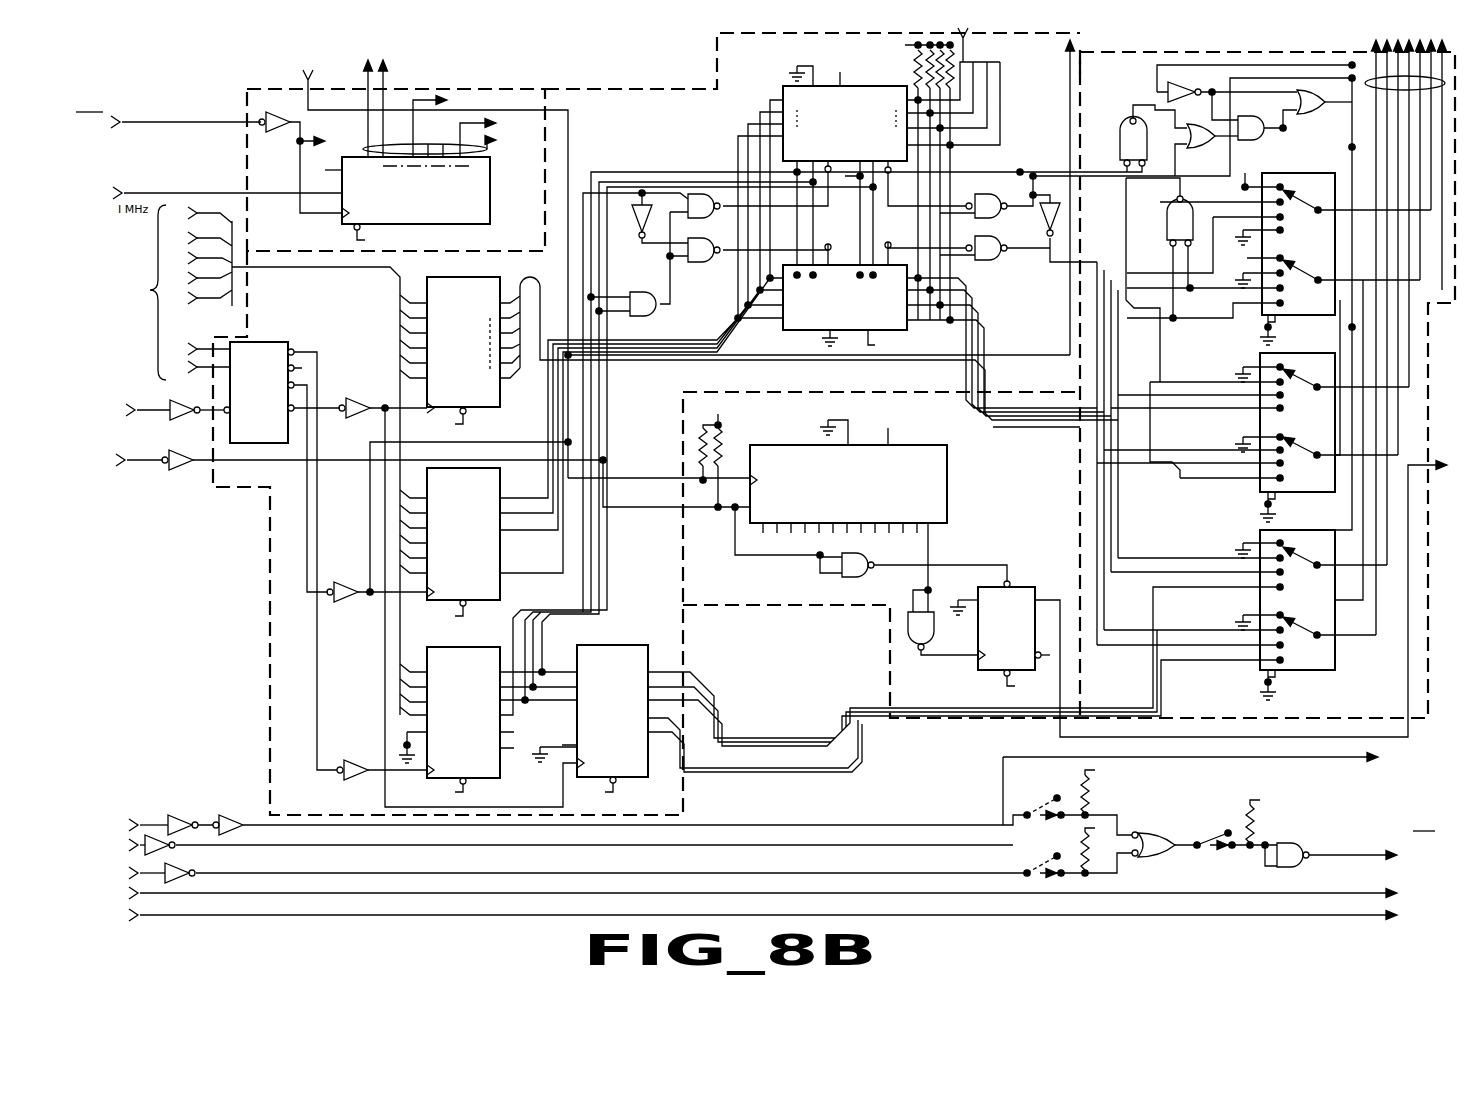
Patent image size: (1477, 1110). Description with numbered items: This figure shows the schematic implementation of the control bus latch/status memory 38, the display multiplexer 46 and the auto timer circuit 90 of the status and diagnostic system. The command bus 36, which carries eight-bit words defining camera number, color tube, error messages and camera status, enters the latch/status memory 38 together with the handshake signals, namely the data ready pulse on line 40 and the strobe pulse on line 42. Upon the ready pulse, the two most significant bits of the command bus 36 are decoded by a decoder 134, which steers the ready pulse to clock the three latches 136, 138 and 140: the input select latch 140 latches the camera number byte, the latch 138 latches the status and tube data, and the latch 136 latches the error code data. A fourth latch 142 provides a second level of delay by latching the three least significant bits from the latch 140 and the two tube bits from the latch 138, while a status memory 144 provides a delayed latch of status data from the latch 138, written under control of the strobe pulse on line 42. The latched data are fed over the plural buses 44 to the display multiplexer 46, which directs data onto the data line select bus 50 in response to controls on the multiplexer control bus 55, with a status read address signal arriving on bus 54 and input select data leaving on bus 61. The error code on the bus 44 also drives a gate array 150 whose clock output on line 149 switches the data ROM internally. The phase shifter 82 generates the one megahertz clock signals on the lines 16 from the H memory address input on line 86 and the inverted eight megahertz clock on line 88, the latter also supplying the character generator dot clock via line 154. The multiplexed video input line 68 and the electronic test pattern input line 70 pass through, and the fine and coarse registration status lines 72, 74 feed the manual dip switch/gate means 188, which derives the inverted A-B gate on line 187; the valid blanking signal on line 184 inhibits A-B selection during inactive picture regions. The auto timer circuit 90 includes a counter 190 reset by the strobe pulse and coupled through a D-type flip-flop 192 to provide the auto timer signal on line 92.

The lines 16 is at (492, 153).
The command bus 36 is at (253, 460).
The control bus latch/status memory 38 is at (708, 51).
The data ready line 40 is at (140, 407).
The strobe line 42 is at (125, 464).
The plural buses 44 is at (958, 353).
The display multiplexer 46 is at (1434, 370).
The data line select bus 50 is at (1428, 30).
The status read address bus 54 is at (1022, 43).
The multiplexer control bus 55 is at (1370, 62).
The input select data bus 61 is at (1073, 70).
The multiplexed video input line 68 is at (145, 896).
The ETP video input line 70 is at (145, 920).
The fine registration status input line 72 is at (146, 878).
The coarse registration status input line 74 is at (147, 837).
The phase shifter 82 is at (530, 80).
The H memory address input line 86 is at (133, 191).
The inverted system clock line 88 is at (133, 120).
The auto timer circuit 90 is at (792, 615).
The auto timer signal line 92 is at (1434, 462).
The decoder 134 is at (298, 349).
The error code latch 136 is at (502, 403).
The status and tube latch 138 is at (502, 480).
The input select latch 140 is at (458, 645).
The second level latch 142 is at (617, 643).
The status memory 144 is at (849, 248).
The line 149 is at (1272, 389).
The gate array 150 is at (1200, 75).
The line 154 is at (298, 150).
The valid blanking input line 184 is at (143, 823).
The inverted A-B gate line 187 is at (1380, 850).
The manual dip switch/gate means 188 is at (1180, 815).
The counter 190 is at (949, 470).
The D-type flip-flop 192 is at (1019, 583).